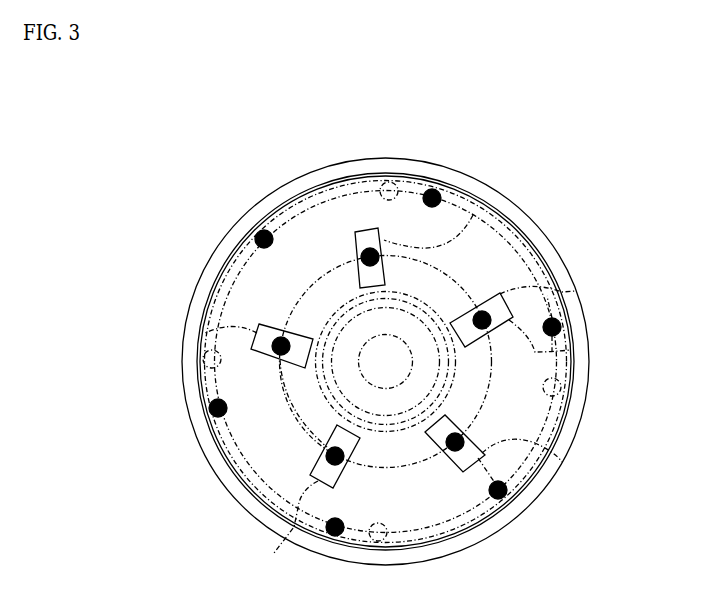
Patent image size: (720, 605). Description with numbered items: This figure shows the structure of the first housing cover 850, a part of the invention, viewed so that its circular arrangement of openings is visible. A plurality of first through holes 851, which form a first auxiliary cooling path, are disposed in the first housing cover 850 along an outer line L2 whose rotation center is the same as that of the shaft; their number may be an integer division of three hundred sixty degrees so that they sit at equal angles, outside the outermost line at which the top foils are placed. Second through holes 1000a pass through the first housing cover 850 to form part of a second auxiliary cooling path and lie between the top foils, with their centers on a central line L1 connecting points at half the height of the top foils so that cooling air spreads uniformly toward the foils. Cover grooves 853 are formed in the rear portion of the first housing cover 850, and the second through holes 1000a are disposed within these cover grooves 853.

The first housing cover 850 is at (472, 213).
The first through holes 851 is at (264, 231).
The cover grooves 853 is at (380, 229).
The second through holes 1000a is at (365, 252).
The central line L1 is at (511, 241).
The outer line L2 is at (575, 291).